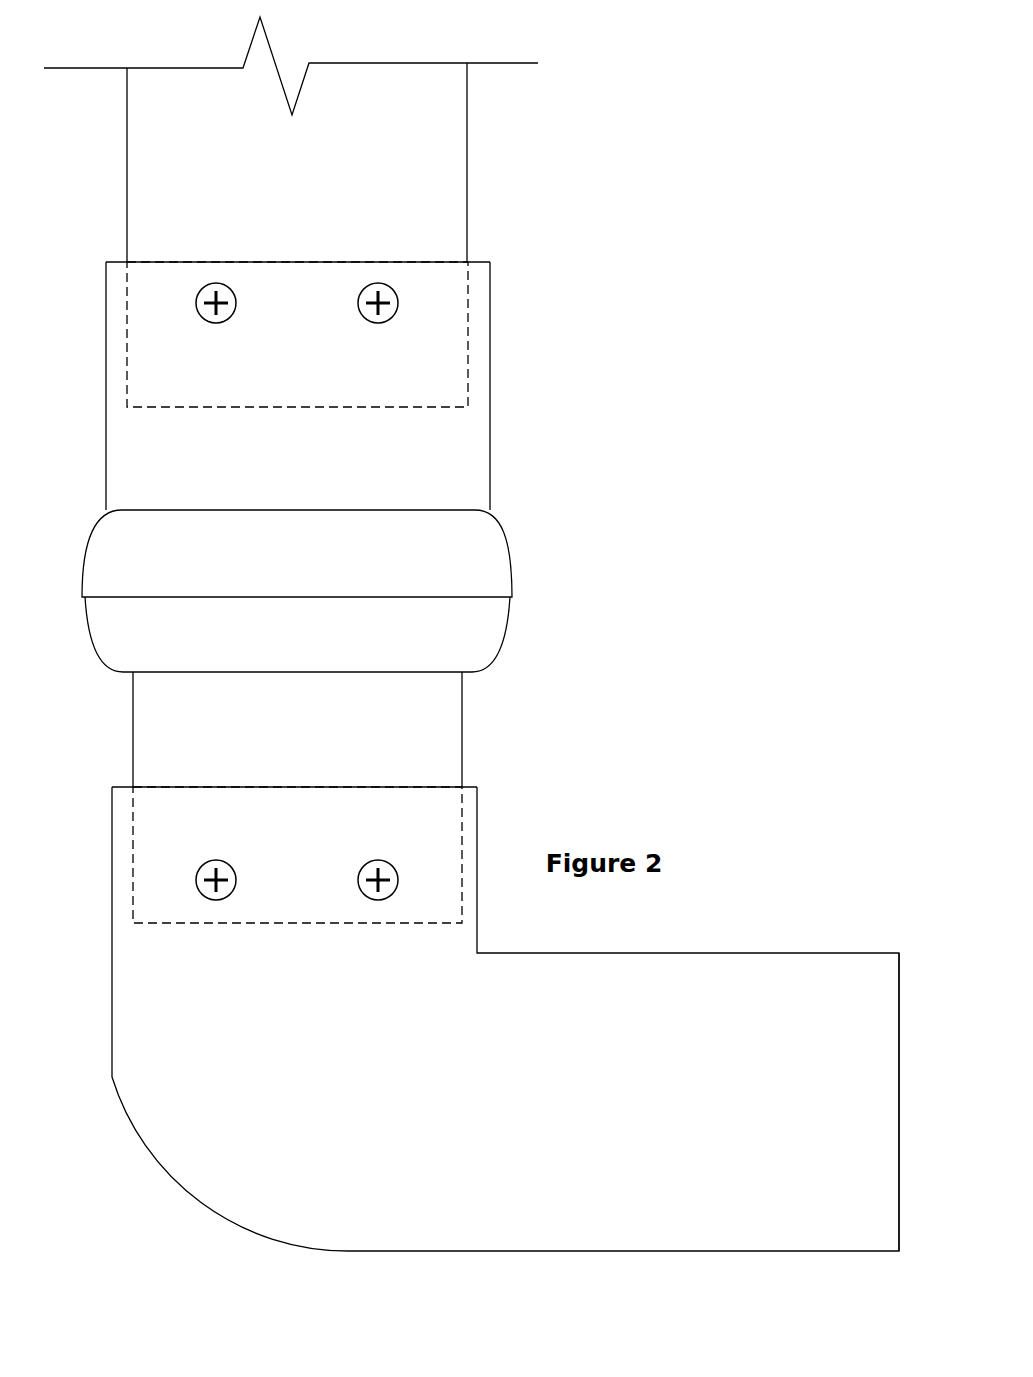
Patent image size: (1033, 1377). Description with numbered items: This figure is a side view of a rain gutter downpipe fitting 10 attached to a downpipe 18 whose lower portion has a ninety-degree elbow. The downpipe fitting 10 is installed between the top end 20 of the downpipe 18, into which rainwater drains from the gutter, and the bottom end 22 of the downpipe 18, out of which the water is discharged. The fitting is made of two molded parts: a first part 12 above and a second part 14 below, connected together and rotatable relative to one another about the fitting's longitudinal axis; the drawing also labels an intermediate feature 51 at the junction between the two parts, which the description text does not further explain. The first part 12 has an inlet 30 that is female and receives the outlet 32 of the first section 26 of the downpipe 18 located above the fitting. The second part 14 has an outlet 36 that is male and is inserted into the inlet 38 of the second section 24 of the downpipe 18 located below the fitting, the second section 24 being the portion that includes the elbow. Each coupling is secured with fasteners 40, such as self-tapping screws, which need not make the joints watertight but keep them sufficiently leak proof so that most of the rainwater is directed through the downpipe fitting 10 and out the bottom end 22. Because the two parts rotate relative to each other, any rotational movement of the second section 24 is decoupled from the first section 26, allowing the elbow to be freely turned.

The downpipe fitting 10 is at (584, 487).
The first part 12 is at (490, 421).
The second part 14 is at (460, 753).
The downpipe 18 is at (467, 175).
The top end 20 is at (417, 63).
The bottom end 22 is at (899, 1088).
The second section 24 is at (442, 1106).
The first section 26 is at (315, 174).
The inlet 30 is at (268, 259).
The outlet 32 is at (282, 408).
The outlet 36 is at (278, 923).
The inlet 38 is at (273, 787).
The fasteners 40 is at (233, 312).
The coupling flange 51 is at (512, 582).